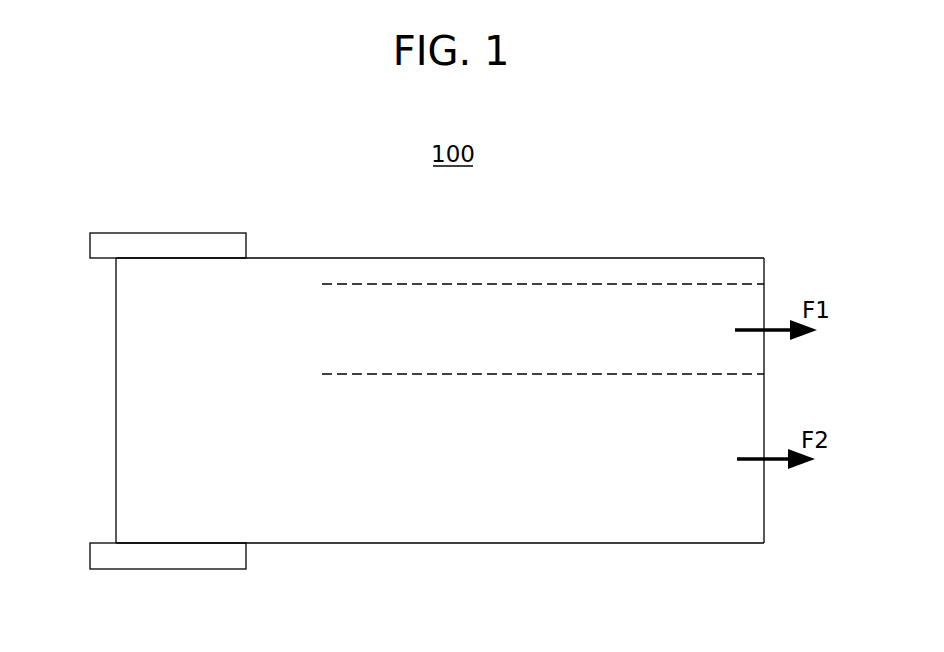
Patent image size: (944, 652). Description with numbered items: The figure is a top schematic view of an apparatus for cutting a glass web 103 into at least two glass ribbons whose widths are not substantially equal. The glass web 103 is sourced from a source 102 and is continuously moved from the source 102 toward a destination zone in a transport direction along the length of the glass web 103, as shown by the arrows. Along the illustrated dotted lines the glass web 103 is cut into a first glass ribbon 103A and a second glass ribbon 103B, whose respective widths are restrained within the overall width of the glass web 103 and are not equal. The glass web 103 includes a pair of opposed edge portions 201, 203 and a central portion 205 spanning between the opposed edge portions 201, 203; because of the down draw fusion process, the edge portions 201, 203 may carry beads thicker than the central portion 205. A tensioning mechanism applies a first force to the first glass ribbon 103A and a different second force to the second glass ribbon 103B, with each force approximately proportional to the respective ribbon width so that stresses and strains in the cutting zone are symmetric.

The source 102 is at (206, 231).
The glass web 103 is at (116, 402).
The first glass ribbon 103A is at (660, 312).
The second glass ribbon 103B is at (648, 479).
The edge portion 201 is at (570, 543).
The edge portion 203 is at (570, 258).
The central portion 205 is at (246, 440).